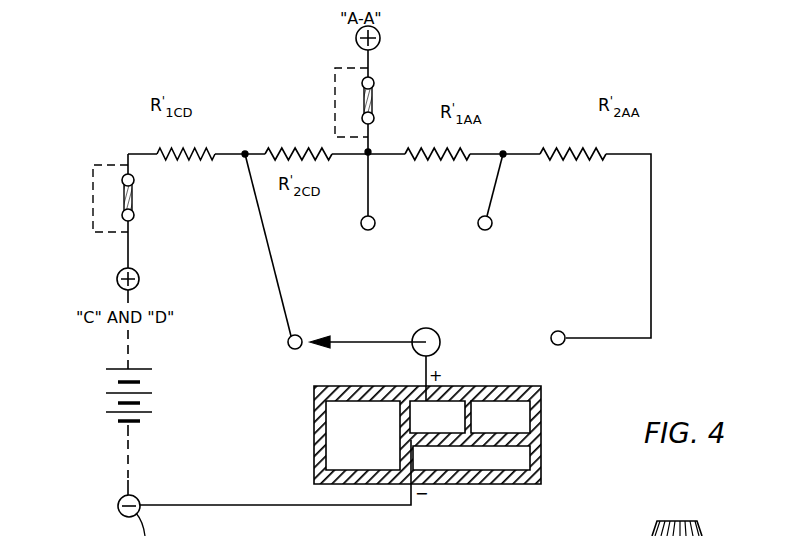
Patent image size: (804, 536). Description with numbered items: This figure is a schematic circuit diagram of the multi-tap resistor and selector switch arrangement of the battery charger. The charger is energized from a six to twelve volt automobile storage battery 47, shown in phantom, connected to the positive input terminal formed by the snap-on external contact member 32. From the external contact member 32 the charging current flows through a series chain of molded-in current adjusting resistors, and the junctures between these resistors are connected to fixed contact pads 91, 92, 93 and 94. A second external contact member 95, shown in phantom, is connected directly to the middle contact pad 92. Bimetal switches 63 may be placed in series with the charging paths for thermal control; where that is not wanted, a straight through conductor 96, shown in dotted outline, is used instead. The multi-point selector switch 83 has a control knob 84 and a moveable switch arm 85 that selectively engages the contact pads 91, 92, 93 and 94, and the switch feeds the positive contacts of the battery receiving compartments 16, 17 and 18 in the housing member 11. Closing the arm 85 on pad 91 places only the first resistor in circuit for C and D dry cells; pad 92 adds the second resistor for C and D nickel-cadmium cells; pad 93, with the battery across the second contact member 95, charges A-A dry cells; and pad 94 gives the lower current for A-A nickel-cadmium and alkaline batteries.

The housing member 11 is at (316, 440).
The battery receiving compartment 16 is at (348, 456).
The battery receiving compartment 17 is at (458, 410).
The battery receiving compartment 18 is at (496, 410).
The external contact member 32 is at (140, 272).
The automobile storage battery 47 is at (150, 392).
The bimetal switch 63 is at (374, 98).
The multi-point selector switch 83 is at (437, 336).
The control knob 84 is at (705, 533).
The moveable switch arm 85 is at (357, 338).
The contact pad 91 is at (300, 336).
The contact pad 92 is at (375, 226).
The contact pad 93 is at (493, 222).
The contact pad 94 is at (565, 345).
The second external contact member 95 is at (380, 37).
The straight through conductor 96 is at (335, 95).